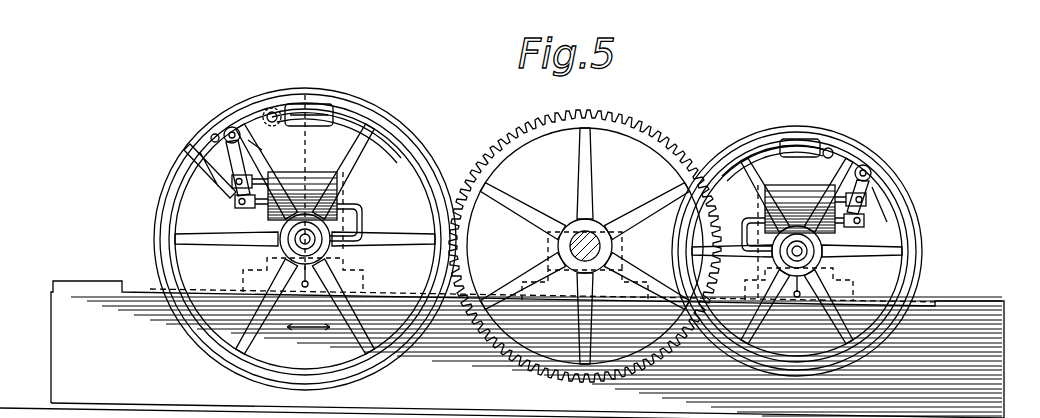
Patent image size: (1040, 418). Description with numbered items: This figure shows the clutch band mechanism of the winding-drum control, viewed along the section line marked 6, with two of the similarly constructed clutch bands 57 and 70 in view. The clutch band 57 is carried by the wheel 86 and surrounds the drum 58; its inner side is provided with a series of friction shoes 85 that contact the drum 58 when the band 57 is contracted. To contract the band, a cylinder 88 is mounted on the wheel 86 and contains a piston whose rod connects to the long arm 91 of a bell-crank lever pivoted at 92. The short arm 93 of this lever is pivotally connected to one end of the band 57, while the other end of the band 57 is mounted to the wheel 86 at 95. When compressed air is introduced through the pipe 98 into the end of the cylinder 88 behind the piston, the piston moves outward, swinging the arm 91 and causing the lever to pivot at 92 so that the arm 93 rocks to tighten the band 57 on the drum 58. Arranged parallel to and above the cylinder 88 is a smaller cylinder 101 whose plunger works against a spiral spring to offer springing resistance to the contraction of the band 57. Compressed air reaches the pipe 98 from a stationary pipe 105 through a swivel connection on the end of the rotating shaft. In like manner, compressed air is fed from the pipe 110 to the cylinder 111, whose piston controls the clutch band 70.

The shaft 6 is at (308, 336).
The clutch band 57 is at (357, 135).
The drum 58 is at (325, 103).
The clutch band 70 is at (727, 173).
The friction shoes 85 is at (395, 152).
The wheel 86 is at (197, 143).
The cylinder 88 is at (312, 208).
The long arm 91 is at (237, 158).
The pivot 92 is at (232, 127).
The short arm 93 is at (212, 134).
The mounting point 95 is at (272, 111).
The pipe 98 is at (363, 217).
The smaller cylinder 101 is at (253, 135).
The pipe 105 is at (263, 248).
The pipe 110 is at (797, 297).
The cylinder 111 is at (846, 153).